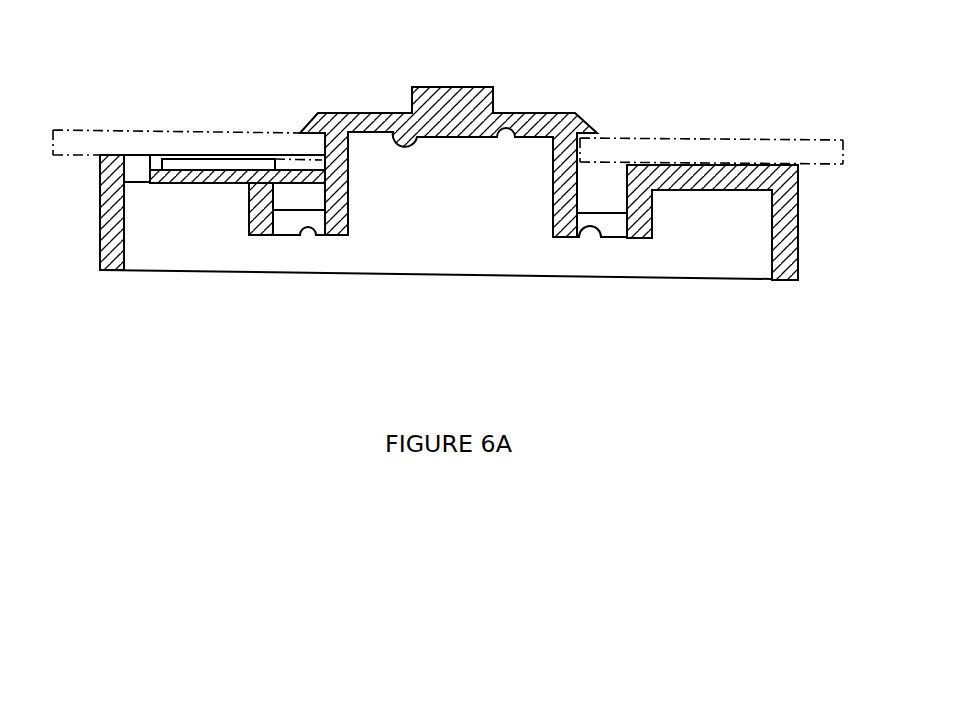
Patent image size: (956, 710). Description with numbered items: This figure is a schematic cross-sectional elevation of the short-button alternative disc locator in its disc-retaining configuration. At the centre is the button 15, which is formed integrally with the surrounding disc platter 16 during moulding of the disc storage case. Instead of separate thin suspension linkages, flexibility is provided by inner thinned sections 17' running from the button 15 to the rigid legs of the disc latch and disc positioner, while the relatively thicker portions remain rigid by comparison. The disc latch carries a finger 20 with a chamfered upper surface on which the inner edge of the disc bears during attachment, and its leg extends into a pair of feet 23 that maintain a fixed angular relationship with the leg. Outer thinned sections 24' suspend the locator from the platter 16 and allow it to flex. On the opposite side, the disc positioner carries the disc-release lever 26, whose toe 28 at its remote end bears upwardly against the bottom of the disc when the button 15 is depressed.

The button 15 is at (462, 92).
The disc platter 16 is at (770, 165).
The inner thinned section 17' is at (448, 134).
The finger 20 is at (610, 122).
The feet 23 is at (612, 228).
The outer thinned section 24' is at (593, 303).
The disc-release lever 26 is at (236, 170).
The toe 28 is at (153, 157).